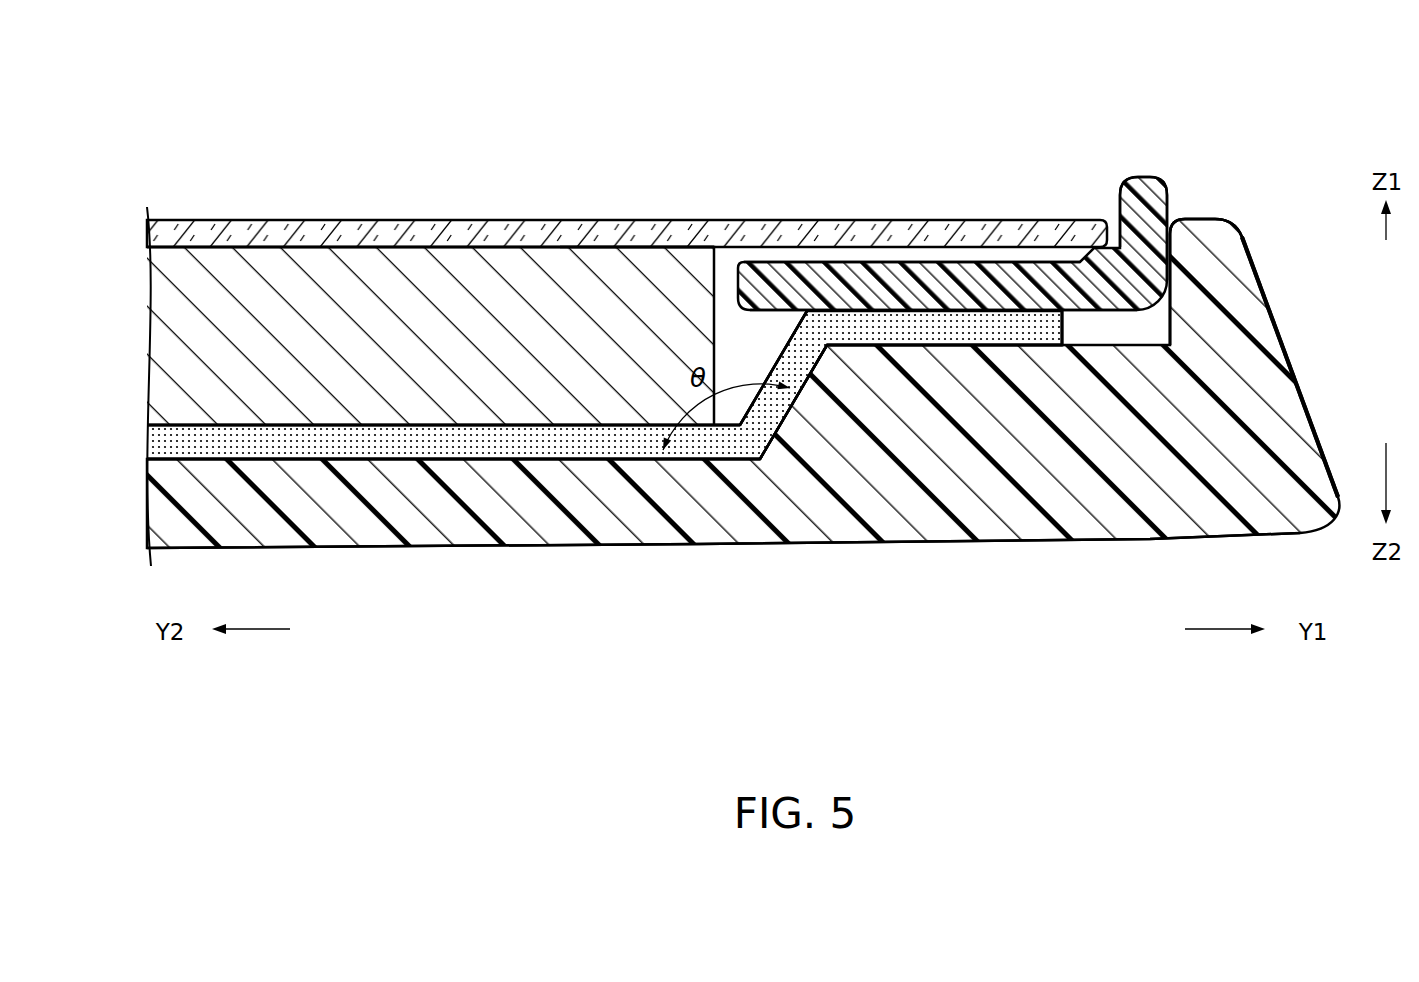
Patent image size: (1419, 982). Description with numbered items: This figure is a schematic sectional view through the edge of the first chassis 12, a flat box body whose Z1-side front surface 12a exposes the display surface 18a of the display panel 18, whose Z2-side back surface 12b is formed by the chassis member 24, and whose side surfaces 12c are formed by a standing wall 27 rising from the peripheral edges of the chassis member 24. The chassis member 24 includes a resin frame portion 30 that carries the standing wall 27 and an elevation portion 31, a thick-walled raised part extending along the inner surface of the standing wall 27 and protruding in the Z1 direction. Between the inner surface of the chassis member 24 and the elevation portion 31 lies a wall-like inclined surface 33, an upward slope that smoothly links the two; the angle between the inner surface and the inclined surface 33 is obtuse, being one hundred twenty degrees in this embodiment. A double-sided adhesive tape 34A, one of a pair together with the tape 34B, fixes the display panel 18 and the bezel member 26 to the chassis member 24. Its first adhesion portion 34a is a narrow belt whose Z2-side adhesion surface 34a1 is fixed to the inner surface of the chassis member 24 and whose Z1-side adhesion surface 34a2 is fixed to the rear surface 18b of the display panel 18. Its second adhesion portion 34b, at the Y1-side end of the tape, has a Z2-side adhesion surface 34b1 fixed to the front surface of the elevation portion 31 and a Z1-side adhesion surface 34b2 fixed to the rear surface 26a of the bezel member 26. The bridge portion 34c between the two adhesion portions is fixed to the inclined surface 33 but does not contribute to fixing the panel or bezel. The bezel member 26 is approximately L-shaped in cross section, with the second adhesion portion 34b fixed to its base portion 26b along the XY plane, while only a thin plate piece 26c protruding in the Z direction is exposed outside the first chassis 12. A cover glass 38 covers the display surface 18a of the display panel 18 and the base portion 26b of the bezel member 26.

The first chassis 12 is at (103, 78).
The front surface 12a is at (445, 222).
The back surface 12b is at (903, 546).
The side surfaces 12c is at (1286, 336).
The display panel 18 is at (545, 282).
The display surface 18a is at (333, 247).
The rear surface 18b is at (247, 428).
The chassis member 24 is at (1035, 556).
The frame portion 30 is at (1179, 471).
The bezel member 26 is at (878, 263).
The rear surface 26a is at (1103, 312).
The base portion 26b is at (826, 282).
The thin plate piece 26c is at (1143, 208).
The standing wall 27 is at (1214, 237).
The elevation portion 31 is at (1030, 343).
The inclined surface 33 is at (808, 311).
The double-sided adhesive tape 34A is at (440, 460).
The double-sided adhesive tape 34B is at (604, 554).
The first adhesion portion 34a is at (358, 447).
The adhesion surface 34a1 is at (623, 462).
The adhesion surface 34a2 is at (533, 425).
The second adhesion portion 34b is at (941, 322).
The adhesion surface 34b1 is at (872, 347).
The adhesion surface 34b2 is at (967, 311).
The bridge portion 34c is at (767, 418).
The cover glass 38 is at (616, 238).